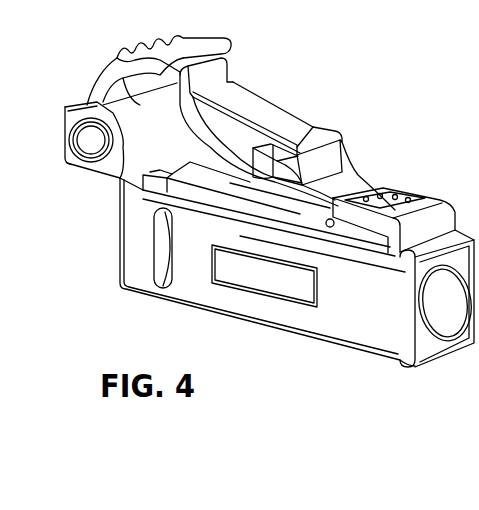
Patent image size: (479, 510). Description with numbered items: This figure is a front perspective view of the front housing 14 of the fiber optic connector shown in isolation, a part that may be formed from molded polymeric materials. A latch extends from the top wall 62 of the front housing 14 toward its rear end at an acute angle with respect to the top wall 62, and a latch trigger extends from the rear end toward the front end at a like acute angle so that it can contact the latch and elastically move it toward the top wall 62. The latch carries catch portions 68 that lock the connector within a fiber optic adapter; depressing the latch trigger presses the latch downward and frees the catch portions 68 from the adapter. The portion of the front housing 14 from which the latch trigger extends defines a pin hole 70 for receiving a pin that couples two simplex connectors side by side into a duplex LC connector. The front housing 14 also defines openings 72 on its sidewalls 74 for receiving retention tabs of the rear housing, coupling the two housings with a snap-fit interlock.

The front housing 14 is at (307, 350).
The top wall 62 is at (254, 203).
The catch portions 68 is at (270, 157).
The pin hole 70 is at (98, 140).
The openings 72 is at (163, 277).
The sidewalls 74 is at (380, 340).